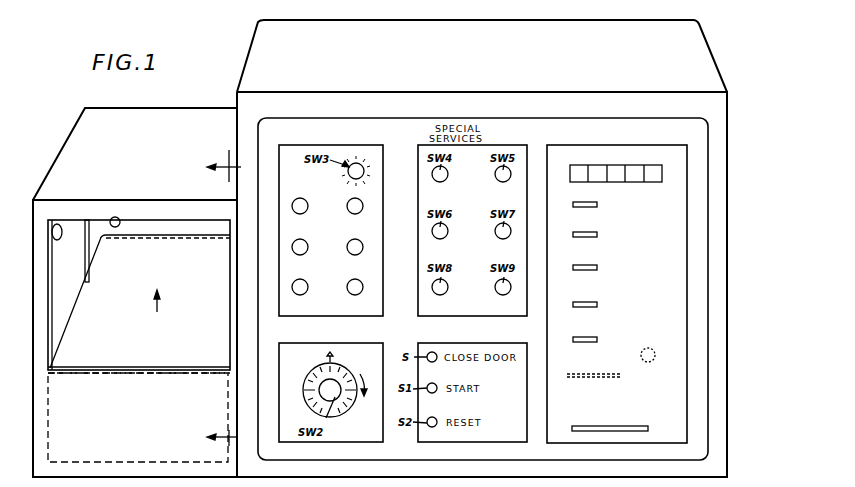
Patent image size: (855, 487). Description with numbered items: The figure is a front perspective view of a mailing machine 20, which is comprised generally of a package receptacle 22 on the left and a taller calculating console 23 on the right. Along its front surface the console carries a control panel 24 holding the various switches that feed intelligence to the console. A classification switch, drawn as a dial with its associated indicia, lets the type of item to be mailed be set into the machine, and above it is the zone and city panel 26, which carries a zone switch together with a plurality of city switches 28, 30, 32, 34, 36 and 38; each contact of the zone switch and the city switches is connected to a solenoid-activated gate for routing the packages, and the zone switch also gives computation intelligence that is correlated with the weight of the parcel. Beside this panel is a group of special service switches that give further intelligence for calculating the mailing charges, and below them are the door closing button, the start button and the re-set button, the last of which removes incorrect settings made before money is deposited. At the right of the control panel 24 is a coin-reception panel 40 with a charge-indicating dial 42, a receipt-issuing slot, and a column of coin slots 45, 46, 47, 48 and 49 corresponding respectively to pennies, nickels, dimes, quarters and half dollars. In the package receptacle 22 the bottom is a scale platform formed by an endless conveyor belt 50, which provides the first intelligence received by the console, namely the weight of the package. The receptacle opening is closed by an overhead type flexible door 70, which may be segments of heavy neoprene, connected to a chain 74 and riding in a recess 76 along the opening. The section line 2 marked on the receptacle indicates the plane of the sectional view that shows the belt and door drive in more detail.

The section line 2 is at (224, 304).
The mailing machine 20 is at (728, 76).
The package receptacle 22 is at (76, 154).
The calculating console 23 is at (729, 186).
The control panel 24 is at (698, 271).
The zone and city panel 26 is at (331, 230).
The city switch 28 is at (301, 198).
The city switch 30 is at (357, 212).
The city switch 32 is at (303, 234).
The city switch 34 is at (356, 254).
The city switch 36 is at (303, 280).
The city switch 38 is at (356, 294).
The coin-reception panel 40 is at (398, 294).
The charge-indicating dial 42 is at (647, 173).
The coin slot 45 is at (594, 207).
The coin slot 46 is at (594, 237).
The coin slot 47 is at (594, 270).
The coin slot 48 is at (594, 307).
The coin slot 49 is at (594, 342).
The endless conveyor belt 50 is at (146, 353).
The flexible door 70 is at (95, 442).
The chain 74 is at (90, 246).
The recess 76 is at (52, 268).